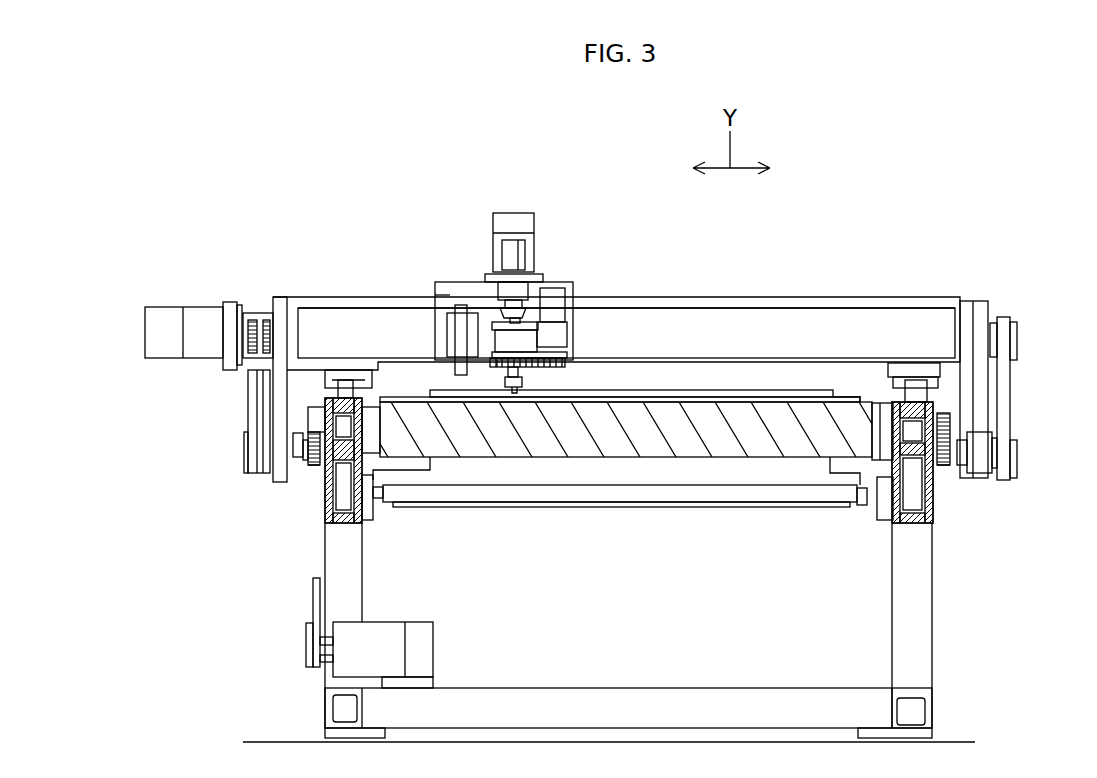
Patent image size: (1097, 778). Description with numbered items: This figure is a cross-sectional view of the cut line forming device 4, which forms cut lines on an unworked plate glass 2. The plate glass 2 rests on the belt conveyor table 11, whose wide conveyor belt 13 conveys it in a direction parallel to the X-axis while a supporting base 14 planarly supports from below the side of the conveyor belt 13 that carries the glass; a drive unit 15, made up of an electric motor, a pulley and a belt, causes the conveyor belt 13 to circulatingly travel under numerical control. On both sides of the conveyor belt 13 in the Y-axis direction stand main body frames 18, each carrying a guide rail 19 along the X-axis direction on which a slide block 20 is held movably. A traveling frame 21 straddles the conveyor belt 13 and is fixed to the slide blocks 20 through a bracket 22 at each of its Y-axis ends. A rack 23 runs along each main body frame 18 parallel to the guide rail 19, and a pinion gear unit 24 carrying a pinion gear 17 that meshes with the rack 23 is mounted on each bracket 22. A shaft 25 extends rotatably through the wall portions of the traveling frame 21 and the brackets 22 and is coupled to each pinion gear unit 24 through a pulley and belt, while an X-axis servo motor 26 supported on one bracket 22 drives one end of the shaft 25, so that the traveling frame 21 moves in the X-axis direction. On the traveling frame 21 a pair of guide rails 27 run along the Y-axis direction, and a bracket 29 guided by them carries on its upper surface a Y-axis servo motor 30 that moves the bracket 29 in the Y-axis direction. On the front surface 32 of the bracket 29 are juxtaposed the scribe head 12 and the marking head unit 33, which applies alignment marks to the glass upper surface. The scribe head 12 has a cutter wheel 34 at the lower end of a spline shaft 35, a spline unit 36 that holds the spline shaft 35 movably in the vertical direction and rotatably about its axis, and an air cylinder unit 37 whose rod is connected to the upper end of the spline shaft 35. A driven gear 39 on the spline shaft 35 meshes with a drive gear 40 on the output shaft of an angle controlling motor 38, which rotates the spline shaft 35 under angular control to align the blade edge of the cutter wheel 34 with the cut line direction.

The unworked plate glass 2 is at (633, 390).
The cut line forming device 4 is at (790, 258).
The belt conveyor table 11 is at (725, 392).
The scribe head 12 is at (510, 317).
The conveyor belt 13 is at (842, 395).
The supporting base 14 is at (677, 437).
The drive unit 15 is at (375, 648).
The pinion gear 17 is at (312, 463).
The main body frame 18 is at (340, 592).
The guide rail 19 is at (343, 387).
The slide block 20 is at (360, 377).
The traveling frame 21 is at (757, 330).
The bracket 22 is at (295, 333).
The rack 23 is at (315, 417).
The pinion gear unit 24 is at (298, 450).
The shaft 25 is at (990, 342).
The X-axis servo motor 26 is at (165, 330).
The guide rail 27 is at (700, 300).
The bracket 29 is at (442, 347).
The Y-axis servo motor 30 is at (512, 225).
The front surface 32 is at (450, 295).
The marking head unit 33 is at (437, 352).
The cutter wheel 34 is at (513, 390).
The spline shaft 35 is at (540, 380).
The spline unit 36 is at (517, 343).
The air cylinder unit 37 is at (513, 262).
The angle controlling motor 38 is at (548, 300).
The driven gear 39 is at (497, 363).
The drive gear 40 is at (523, 372).